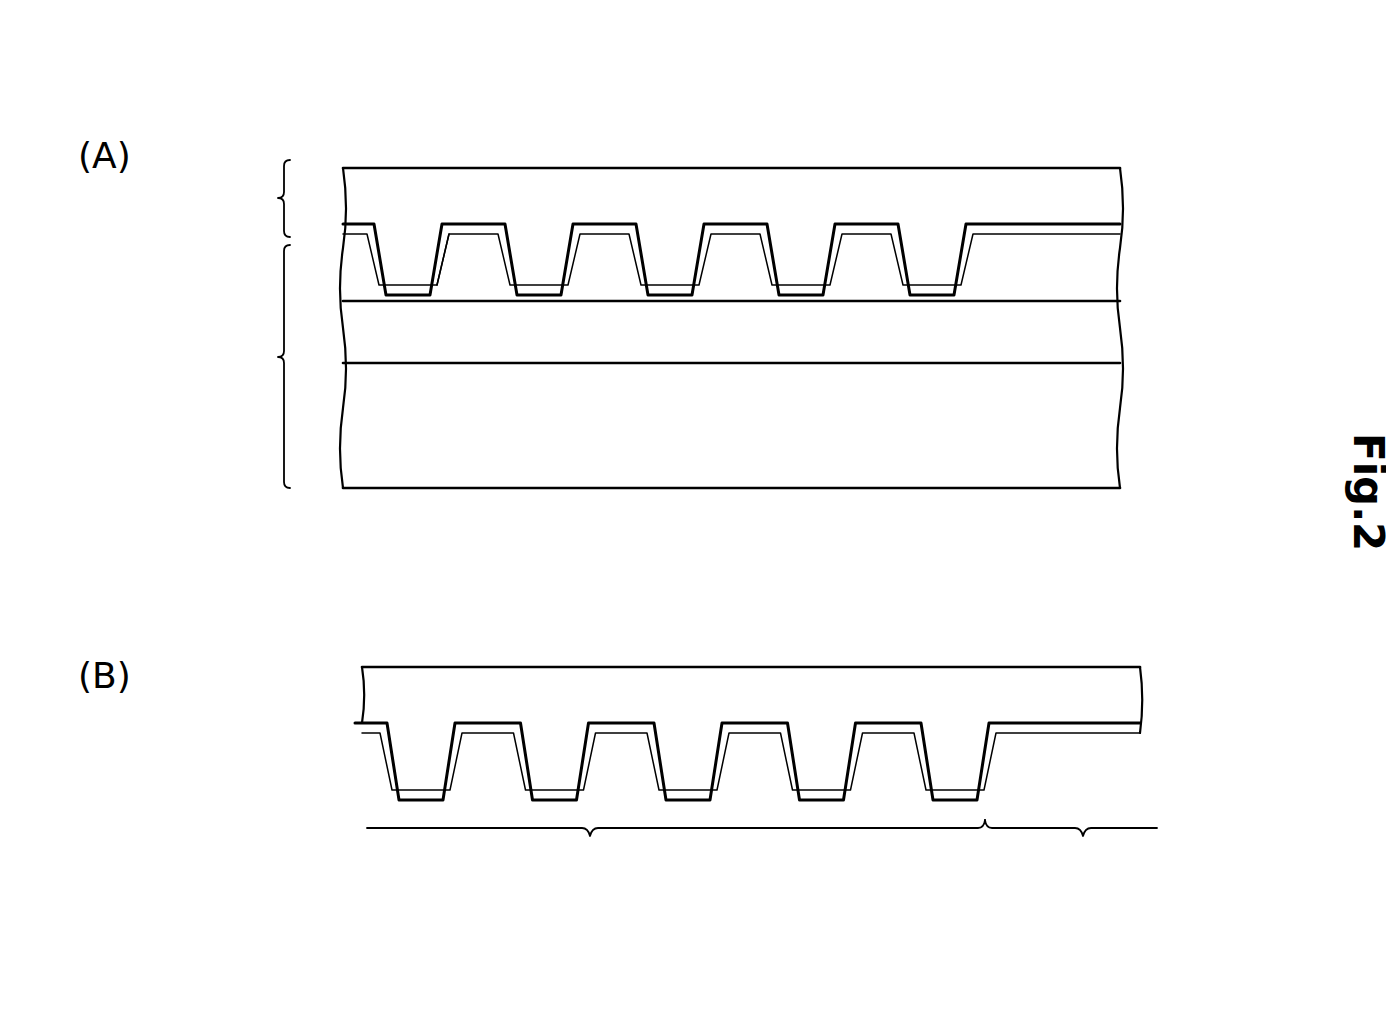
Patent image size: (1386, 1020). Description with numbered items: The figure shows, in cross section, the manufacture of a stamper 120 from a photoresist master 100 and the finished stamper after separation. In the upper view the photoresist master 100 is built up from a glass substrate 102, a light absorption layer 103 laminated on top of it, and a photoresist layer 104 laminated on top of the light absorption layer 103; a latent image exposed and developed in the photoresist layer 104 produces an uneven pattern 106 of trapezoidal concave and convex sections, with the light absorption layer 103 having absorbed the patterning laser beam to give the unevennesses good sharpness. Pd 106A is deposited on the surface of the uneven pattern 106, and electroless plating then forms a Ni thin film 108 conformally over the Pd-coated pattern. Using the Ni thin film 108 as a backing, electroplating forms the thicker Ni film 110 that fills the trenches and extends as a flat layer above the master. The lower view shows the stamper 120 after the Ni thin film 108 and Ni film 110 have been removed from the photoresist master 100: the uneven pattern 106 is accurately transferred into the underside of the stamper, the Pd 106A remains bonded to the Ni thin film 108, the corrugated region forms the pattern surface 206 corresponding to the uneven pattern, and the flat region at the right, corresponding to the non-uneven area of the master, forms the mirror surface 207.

In FIG. 2A, the photoresist master 100 is at (250, 366).
In FIG. 2A, the glass substrate 102 is at (1098, 412).
In FIG. 2A, the light absorption layer 103 is at (1103, 330).
In FIG. 2A, the photoresist layer 104 is at (1103, 265).
In FIG. 2A, the uneven pattern 106 is at (647, 257).
In FIG. 2A, the Pd 106A is at (443, 265).
In FIG. 2B, the Pd 106A is at (394, 776).
In FIG. 2A, the Ni thin film 108 is at (470, 228).
In FIG. 2B, the Ni thin film 108 is at (487, 727).
In FIG. 2A, the Ni film 110 is at (960, 197).
In FIG. 2B, the Ni film 110 is at (952, 698).
In FIG. 2A, the stamper 120 is at (255, 198).
In FIG. 2B, the stamper 120 is at (345, 678).
In FIG. 2B, the pattern surface 206 is at (676, 844).
In FIG. 2B, the mirror surface 207 is at (1071, 846).